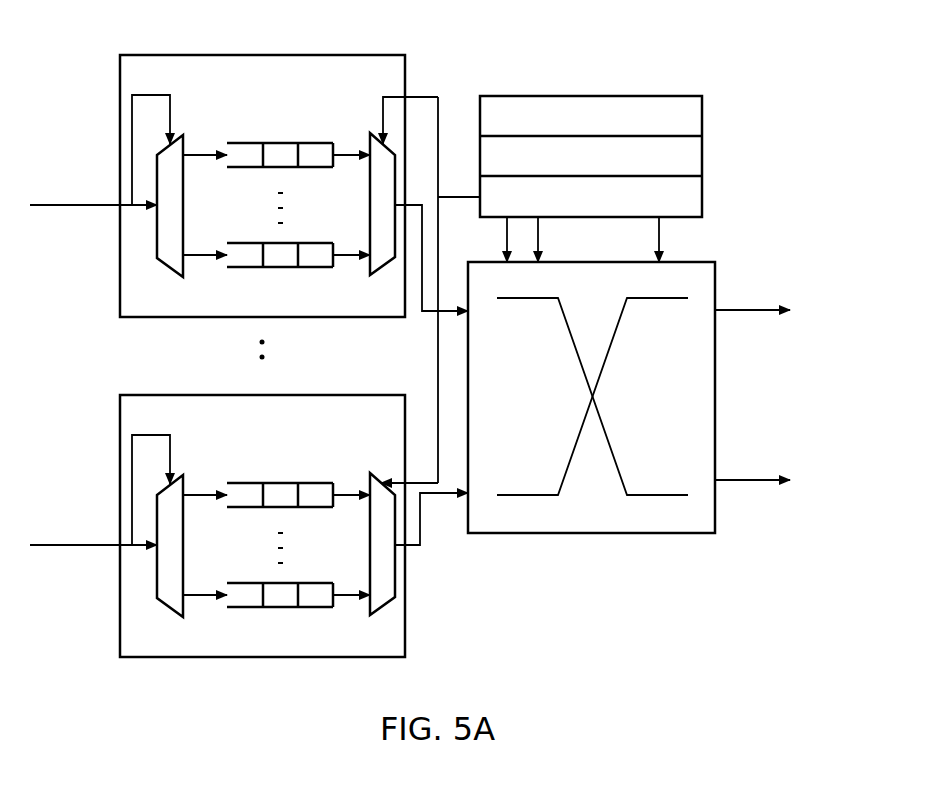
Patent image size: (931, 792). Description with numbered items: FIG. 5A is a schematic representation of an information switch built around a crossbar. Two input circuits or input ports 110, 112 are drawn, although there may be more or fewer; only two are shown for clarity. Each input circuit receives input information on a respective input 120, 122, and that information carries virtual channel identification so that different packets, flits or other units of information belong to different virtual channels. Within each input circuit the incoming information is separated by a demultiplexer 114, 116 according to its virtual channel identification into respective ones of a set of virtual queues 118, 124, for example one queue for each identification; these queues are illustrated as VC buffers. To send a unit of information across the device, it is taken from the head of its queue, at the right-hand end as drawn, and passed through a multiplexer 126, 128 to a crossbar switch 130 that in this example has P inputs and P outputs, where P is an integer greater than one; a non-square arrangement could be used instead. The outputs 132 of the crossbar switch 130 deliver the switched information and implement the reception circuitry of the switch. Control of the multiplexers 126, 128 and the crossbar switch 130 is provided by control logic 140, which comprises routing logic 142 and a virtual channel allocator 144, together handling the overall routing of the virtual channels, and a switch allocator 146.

The input circuit 110 is at (257, 54).
The input circuit 112 is at (193, 657).
The demultiplexer 114 is at (153, 245).
The demultiplexer 116 is at (153, 585).
The virtual queue 118 is at (315, 142).
The input 120 is at (73, 205).
The input 122 is at (73, 545).
The virtual queue 124 is at (252, 483).
The multiplexer 126 is at (383, 265).
The multiplexer 128 is at (384, 605).
The crossbar switch 130 is at (663, 533).
The outputs 132 is at (723, 313).
The control logic 140 is at (641, 77).
The routing logic 142 is at (703, 117).
The virtual channel allocator 144 is at (703, 157).
The switch allocator 146 is at (703, 197).